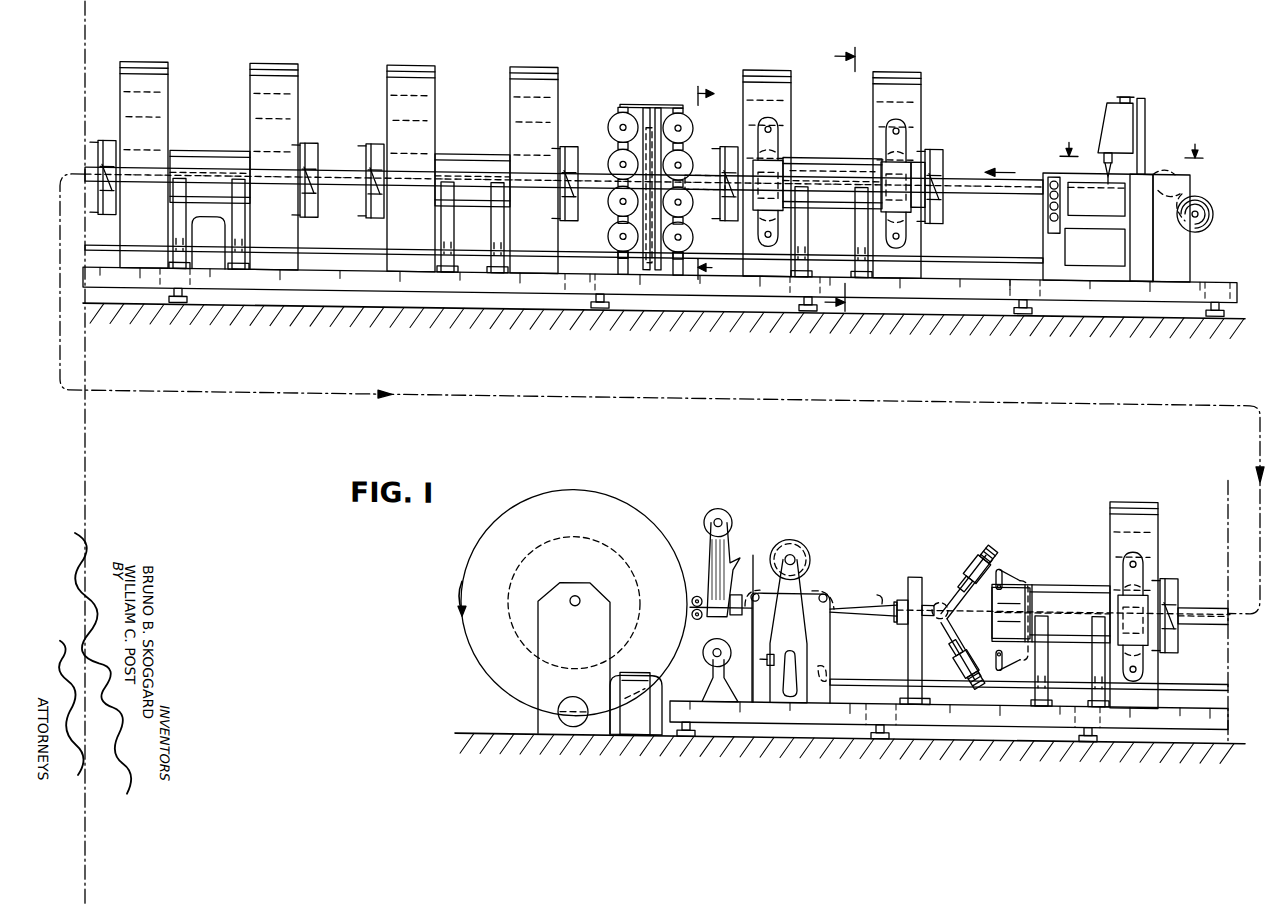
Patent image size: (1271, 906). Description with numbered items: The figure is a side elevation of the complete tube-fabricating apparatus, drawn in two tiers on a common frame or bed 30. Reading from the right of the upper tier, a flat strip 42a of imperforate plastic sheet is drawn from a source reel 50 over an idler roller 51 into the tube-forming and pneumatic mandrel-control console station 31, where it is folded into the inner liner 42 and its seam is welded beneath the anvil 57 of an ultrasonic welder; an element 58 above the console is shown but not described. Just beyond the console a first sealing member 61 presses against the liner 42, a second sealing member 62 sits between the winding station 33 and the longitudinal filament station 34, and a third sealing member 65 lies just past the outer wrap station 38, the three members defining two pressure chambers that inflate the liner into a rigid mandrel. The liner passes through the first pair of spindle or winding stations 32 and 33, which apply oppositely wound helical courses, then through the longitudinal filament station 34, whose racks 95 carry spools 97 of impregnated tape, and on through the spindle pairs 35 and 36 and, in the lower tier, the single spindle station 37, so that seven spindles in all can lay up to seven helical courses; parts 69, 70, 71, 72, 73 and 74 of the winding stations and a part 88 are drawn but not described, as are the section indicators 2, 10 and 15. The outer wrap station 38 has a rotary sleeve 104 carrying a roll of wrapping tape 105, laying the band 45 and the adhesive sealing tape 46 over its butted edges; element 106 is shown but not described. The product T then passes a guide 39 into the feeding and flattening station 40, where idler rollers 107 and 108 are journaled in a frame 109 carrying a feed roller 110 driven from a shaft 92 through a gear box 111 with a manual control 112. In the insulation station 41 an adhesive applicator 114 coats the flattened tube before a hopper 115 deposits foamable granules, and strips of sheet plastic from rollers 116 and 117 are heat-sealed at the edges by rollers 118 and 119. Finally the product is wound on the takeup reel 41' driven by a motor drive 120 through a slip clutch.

The section line 2- 2 is at (1131, 150).
The section line 10- 10 is at (847, 172).
The section line 15- 15 is at (716, 174).
The frame or bed 30 is at (1222, 266).
The tube-forming and pneumatic mandrel-control console station 31 is at (1131, 178).
The spindle or winding station 32 is at (905, 60).
The spindle or winding station 33 is at (772, 60).
The longitudinal filament station 34 is at (655, 169).
The spindle pair 35 is at (510, 65).
The spindle pair 36 is at (250, 66).
The single spindle station 37 is at (1140, 487).
The outer wrap station 38 is at (1008, 530).
The guide 39 is at (910, 560).
The tube feeding and flattening station 40 is at (799, 608).
The insulation applicator station 41 is at (706, 590).
The driven takeup reel 41' is at (557, 611).
The inner liner 42 is at (990, 182).
The flat strip 42a is at (1192, 182).
The band or strip of sheet plastic 45 is at (955, 562).
The adhesive sealing strip 46 is at (960, 622).
The source reel 50 is at (1214, 198).
The idler roller 51 is at (1172, 158).
The anvil of ultrasonic welder 57 is at (1106, 138).
The reservoir 58 is at (1108, 88).
The sealing ring 61 is at (1040, 175).
The second sealing member 62 is at (697, 184).
The third sealing member 65 is at (942, 588).
The bearing block 69 is at (930, 127).
The roll stand 70 is at (784, 135).
The forming roll 71 is at (834, 147).
The support post 72 is at (808, 216).
The support post 73 is at (868, 228).
The roll stand 74 is at (912, 112).
The bearing 88 is at (944, 146).
The shaft 92 is at (822, 244).
The rack 95 is at (622, 96).
The spools or bobbins 97 is at (688, 110).
The rotary sleeve 104 is at (1022, 571).
The roll of wrapping tape 105 is at (992, 534).
The fitting 106 is at (975, 660).
The idler roller 107 is at (830, 582).
The idler roller 108 is at (753, 582).
The frame 109 is at (820, 621).
The feed roller 110 is at (795, 529).
The gear box 111 is at (800, 660).
The manual control 112 is at (760, 647).
The adhesive applicator 114 is at (735, 606).
The hopper or magazine 115 is at (733, 545).
The sheet plastic feed roller 116 is at (718, 499).
The sheet plastic feed roller 117 is at (707, 648).
The heat-sealing roller 118 is at (691, 606).
The heat-sealing roller 119 is at (690, 586).
The motor drive 120 is at (632, 726).
The flexible tubular product T is at (879, 590).